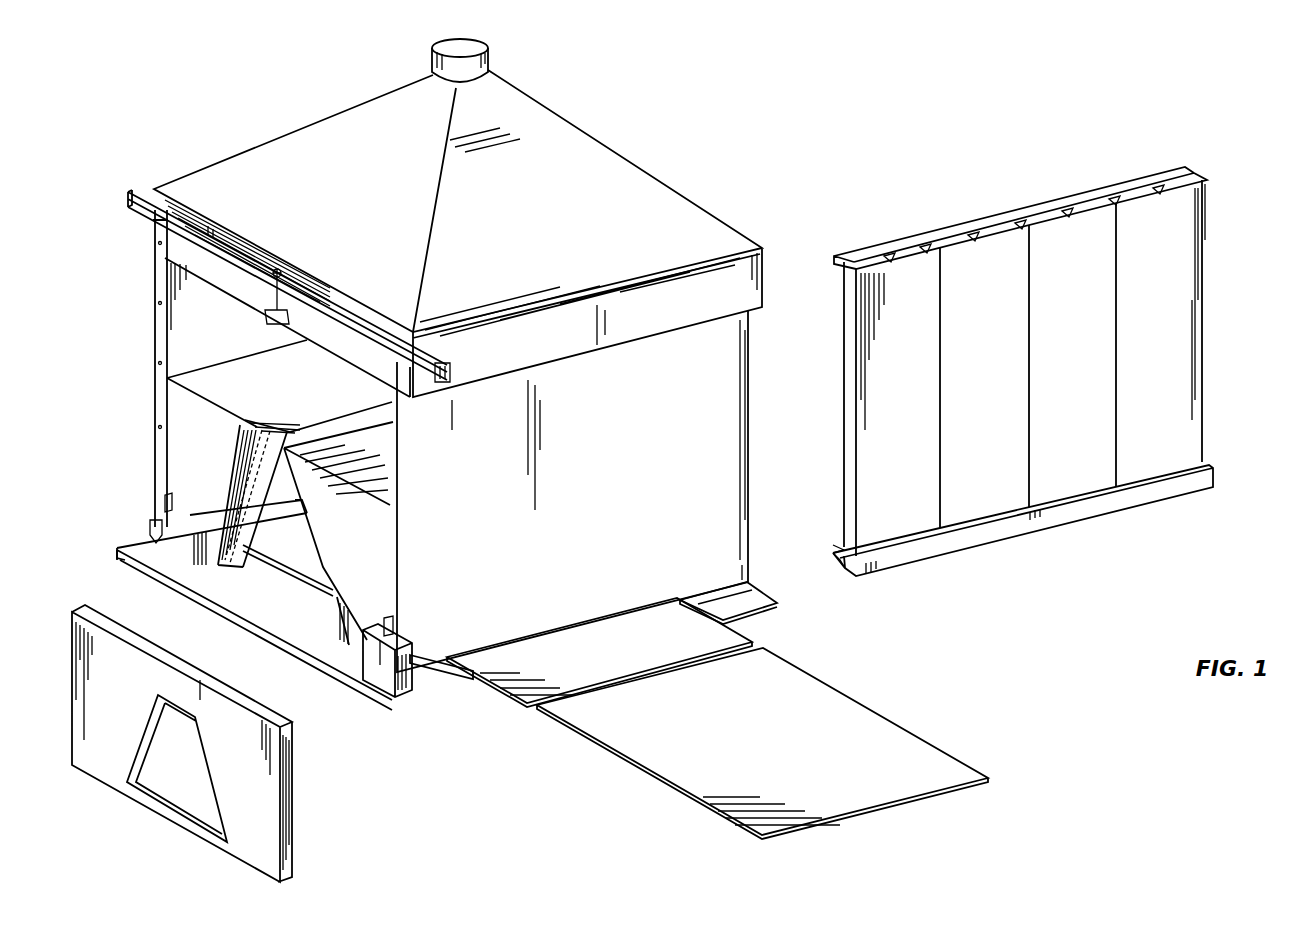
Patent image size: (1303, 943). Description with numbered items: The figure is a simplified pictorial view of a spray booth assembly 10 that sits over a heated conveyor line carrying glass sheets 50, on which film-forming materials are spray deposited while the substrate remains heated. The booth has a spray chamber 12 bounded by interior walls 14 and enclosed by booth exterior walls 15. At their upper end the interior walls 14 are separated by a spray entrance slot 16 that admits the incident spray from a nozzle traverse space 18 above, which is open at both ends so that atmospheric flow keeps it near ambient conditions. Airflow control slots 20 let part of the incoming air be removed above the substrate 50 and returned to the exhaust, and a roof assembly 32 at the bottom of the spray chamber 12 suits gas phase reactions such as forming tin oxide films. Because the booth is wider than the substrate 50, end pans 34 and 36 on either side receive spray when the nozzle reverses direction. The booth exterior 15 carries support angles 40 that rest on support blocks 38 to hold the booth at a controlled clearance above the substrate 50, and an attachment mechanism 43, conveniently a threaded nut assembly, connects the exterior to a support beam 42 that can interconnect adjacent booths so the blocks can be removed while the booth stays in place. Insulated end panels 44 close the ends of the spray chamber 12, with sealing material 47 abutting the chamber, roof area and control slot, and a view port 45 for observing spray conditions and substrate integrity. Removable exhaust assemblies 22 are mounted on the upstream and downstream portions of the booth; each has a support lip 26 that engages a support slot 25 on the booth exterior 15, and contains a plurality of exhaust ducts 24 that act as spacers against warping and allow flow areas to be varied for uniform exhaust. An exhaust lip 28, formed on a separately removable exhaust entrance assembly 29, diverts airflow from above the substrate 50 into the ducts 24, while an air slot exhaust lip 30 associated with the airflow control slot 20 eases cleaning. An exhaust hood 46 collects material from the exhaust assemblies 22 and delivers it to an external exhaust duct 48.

The spray booth assembly 10 is at (205, 95).
The spray chamber 12 is at (265, 480).
The interior walls 14 is at (252, 465).
The booth exterior walls 15 is at (566, 466).
The spray entrance slot 16 is at (300, 433).
The nozzle traverse space 18 is at (204, 381).
The airflow control slots 20 is at (320, 573).
The removable exhaust assemblies 22 is at (153, 297).
The exhaust ducts 24 is at (1080, 200).
The support slot 25 is at (172, 245).
The exhaust assembly support lip 26 is at (866, 252).
The exhaust lip 28 is at (150, 532).
The exhaust entrance assembly 29 is at (933, 545).
The air slot exhaust lip 30 is at (117, 552).
The roof assembly 32 is at (192, 588).
The end pan 34 is at (440, 678).
The end pan 36 is at (765, 610).
The support blocks 38 is at (385, 700).
The support angles 40 is at (163, 496).
The support beam 42 is at (452, 372).
The attachment mechanism 43 is at (285, 300).
The end panels 44 is at (267, 828).
The view port 45 is at (160, 775).
The exhaust hood 46 is at (535, 132).
The sealing material 47 is at (293, 782).
The external exhaust duct 48 is at (466, 48).
The glass sheets 50 is at (594, 660).